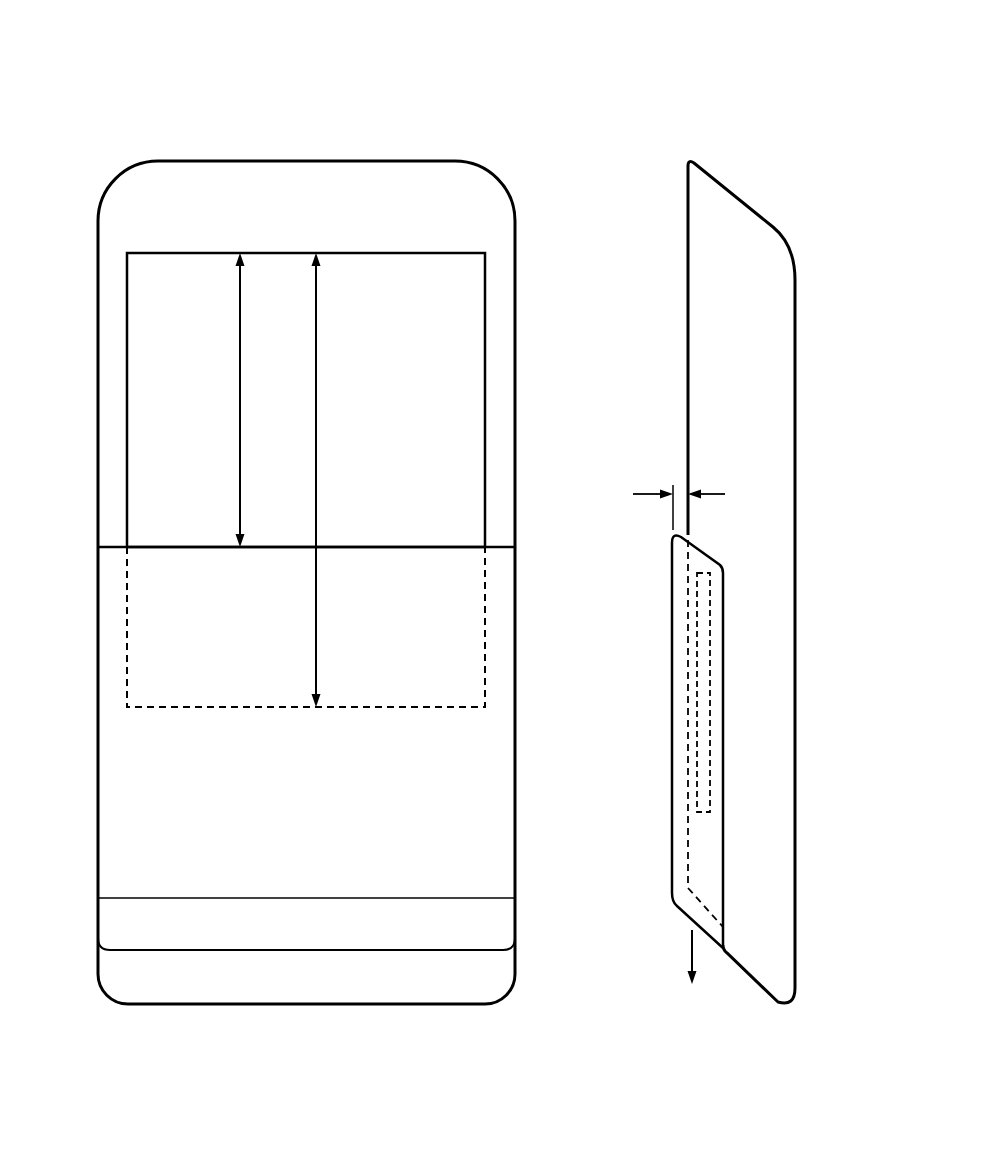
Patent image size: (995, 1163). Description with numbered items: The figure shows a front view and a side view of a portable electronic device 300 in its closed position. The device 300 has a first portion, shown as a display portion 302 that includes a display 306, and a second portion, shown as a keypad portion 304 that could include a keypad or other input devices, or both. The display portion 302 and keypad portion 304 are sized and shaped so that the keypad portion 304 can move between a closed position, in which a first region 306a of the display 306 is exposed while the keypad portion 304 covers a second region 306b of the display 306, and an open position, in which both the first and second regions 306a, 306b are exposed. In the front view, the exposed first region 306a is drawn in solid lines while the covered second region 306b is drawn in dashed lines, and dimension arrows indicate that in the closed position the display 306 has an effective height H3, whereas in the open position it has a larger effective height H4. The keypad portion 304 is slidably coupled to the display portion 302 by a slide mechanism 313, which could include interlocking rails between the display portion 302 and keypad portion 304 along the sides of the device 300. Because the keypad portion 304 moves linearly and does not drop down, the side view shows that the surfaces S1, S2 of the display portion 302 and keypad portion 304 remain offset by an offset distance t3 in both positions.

In FIG. 6, the portable electronic device 300 is at (146, 98).
In FIG. 7, the portable electronic device 300 is at (746, 98).
In FIG. 6, the display portion 302 is at (457, 176).
In FIG. 7, the display portion 302 is at (773, 212).
In FIG. 6, the keypad portion 304 is at (143, 833).
In FIG. 7, the keypad portion 304 is at (678, 822).
In FIG. 6, the display 306 is at (143, 470).
In FIG. 7, the display 306 is at (693, 412).
In FIG. 6, the first region of the display 306a is at (146, 298).
In FIG. 7, the first region of the display 306a is at (676, 318).
In FIG. 6, the second region of the display 306b is at (148, 601).
In FIG. 7, the second region of the display 306b is at (676, 653).
In FIG. 7, the slide mechanism 313 is at (697, 690).
In FIG. 6, the effective height of the display in the closed position H3 is at (240, 395).
In FIG. 6, the effective height of the display in the open position H4 is at (317, 446).
In FIG. 7, the surface of the display portion S1 is at (676, 375).
In FIG. 7, the surface of the keypad portion S2 is at (660, 725).
In FIG. 7, the offset distance t3 is at (633, 494).